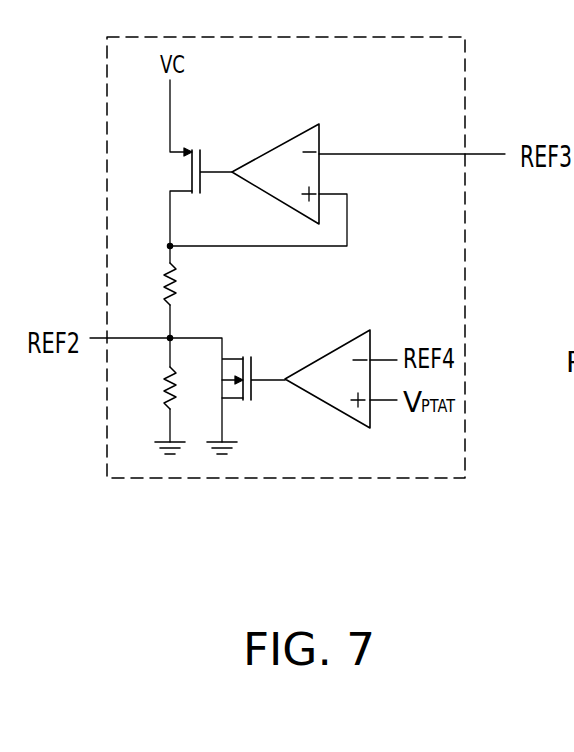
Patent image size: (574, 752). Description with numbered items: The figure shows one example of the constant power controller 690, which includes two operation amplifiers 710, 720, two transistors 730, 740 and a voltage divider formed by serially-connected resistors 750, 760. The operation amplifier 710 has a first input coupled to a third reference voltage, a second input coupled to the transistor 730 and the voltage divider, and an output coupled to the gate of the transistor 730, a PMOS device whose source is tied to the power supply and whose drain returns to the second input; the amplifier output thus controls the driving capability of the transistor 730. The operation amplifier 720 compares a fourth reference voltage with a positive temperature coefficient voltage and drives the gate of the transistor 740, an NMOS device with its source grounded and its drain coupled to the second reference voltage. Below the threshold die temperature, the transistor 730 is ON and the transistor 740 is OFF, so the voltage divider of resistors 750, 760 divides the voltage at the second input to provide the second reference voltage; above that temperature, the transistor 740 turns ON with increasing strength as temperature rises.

The constant power controller 690 is at (280, 478).
The operation amplifier 710 is at (266, 152).
The operation amplifier 720 is at (315, 353).
The transistor 730 is at (181, 170).
The transistor 740 is at (261, 398).
The resistor 750 is at (147, 285).
The resistor 760 is at (146, 388).